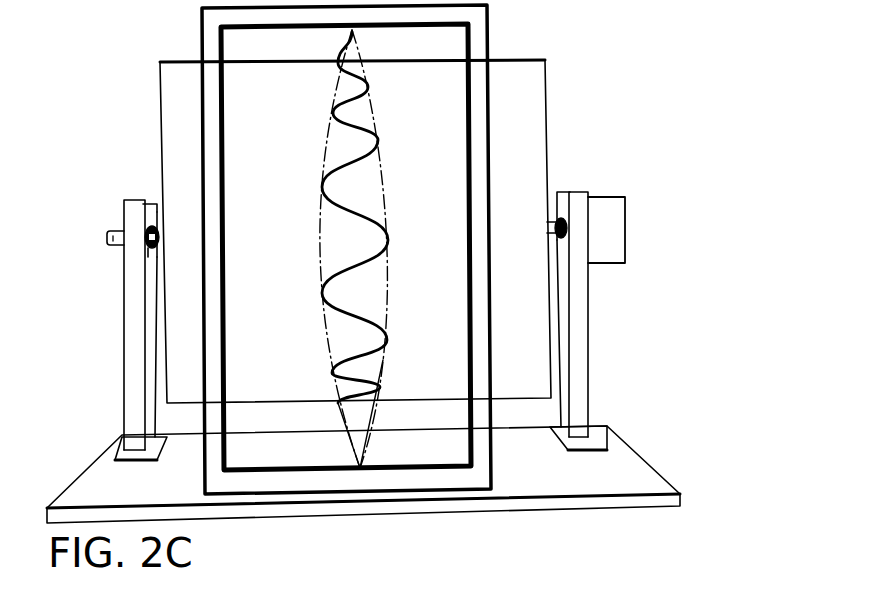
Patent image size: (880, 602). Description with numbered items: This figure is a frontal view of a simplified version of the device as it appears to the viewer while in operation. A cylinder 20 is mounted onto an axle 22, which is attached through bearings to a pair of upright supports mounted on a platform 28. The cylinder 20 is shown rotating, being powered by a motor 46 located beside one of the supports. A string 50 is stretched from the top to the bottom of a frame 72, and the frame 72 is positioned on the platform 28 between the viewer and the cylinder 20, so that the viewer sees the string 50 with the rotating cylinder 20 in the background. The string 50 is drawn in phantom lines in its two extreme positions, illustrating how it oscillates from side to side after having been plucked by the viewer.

The cylinder 20 is at (508, 78).
The axle 22 is at (117, 230).
The platform 28 is at (132, 470).
The motor 46 is at (628, 231).
The string 50 is at (383, 165).
The frame 72 is at (210, 127).